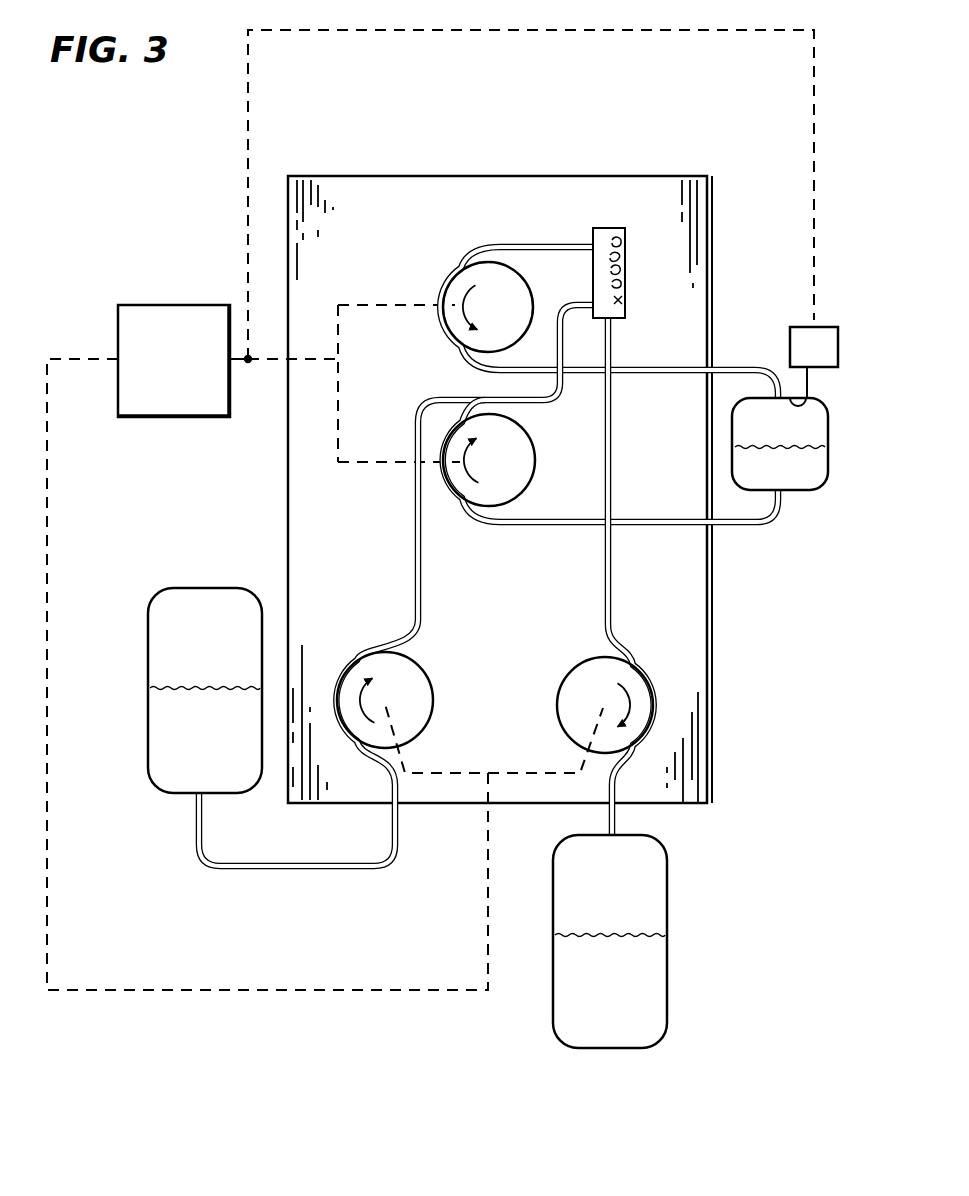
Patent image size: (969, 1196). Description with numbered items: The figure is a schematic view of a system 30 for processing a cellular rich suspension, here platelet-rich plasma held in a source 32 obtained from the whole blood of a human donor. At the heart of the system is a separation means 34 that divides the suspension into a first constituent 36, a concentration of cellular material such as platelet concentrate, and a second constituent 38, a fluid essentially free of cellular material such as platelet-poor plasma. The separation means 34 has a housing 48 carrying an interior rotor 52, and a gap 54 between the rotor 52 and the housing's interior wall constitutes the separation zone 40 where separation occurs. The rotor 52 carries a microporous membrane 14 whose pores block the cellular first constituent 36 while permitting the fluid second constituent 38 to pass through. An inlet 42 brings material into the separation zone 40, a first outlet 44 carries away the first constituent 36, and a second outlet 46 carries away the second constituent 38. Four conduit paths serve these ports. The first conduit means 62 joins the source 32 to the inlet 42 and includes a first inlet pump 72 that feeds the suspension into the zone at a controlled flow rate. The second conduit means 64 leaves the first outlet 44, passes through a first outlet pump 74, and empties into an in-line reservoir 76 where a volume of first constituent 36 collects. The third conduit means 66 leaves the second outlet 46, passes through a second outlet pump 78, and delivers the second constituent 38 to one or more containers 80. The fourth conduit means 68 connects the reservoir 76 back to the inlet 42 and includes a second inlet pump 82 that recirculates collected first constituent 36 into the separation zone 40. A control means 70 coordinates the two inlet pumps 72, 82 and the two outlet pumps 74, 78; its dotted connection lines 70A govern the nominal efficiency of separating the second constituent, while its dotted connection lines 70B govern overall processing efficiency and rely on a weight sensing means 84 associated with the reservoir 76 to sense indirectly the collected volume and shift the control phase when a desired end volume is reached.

The microporous membrane 14 is at (628, 264).
The system 30 is at (830, 284).
The source 32 is at (160, 748).
The separation means 34 is at (630, 288).
The first constituent 36 is at (803, 493).
The second constituent 38 is at (645, 983).
The separation zone 40 is at (630, 245).
The inlet 42 is at (590, 302).
The first outlet 44 is at (593, 242).
The second outlet 46 is at (620, 320).
The housing 48 is at (628, 302).
The rotor 52 is at (618, 228).
The gap 54 is at (628, 252).
The first conduit means 62 is at (421, 575).
The second conduit means 64 is at (522, 243).
The third conduit means 66 is at (603, 552).
The fourth conduit means 68 is at (720, 528).
The control means 70 is at (162, 315).
The dotted connection lines 70A is at (192, 993).
The dotted connection lines 70B is at (290, 362).
The first inlet pump 72 is at (412, 680).
The first outlet pump 74 is at (448, 320).
The in-line reservoir 76 is at (818, 410).
The second outlet pump 78 is at (637, 682).
The containers 80 is at (650, 885).
The second inlet pump 82 is at (455, 492).
The weight sensing means 84 is at (826, 330).